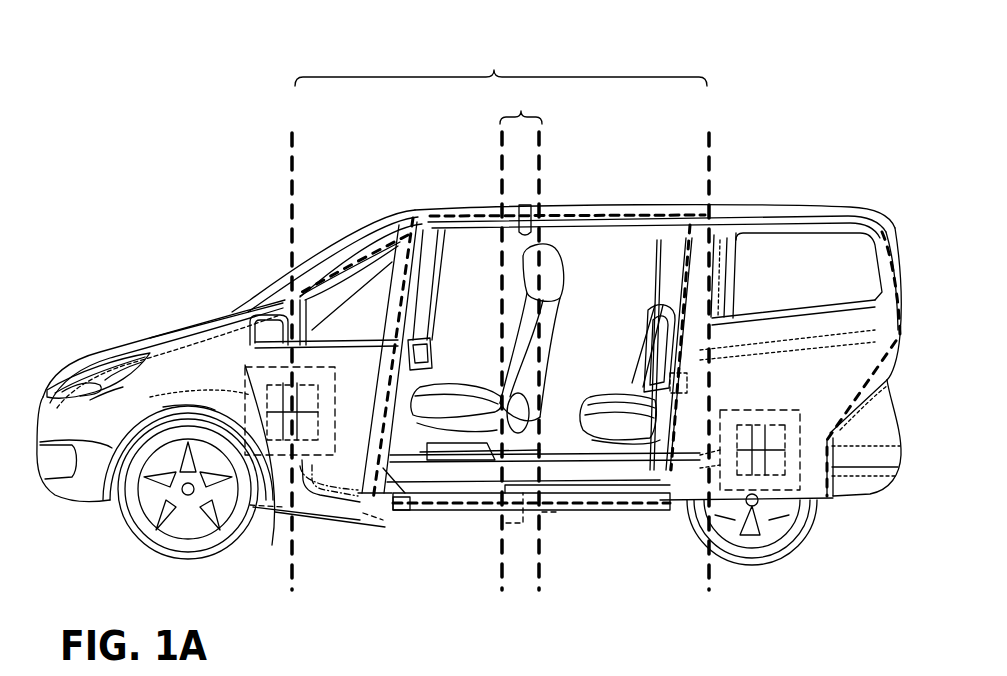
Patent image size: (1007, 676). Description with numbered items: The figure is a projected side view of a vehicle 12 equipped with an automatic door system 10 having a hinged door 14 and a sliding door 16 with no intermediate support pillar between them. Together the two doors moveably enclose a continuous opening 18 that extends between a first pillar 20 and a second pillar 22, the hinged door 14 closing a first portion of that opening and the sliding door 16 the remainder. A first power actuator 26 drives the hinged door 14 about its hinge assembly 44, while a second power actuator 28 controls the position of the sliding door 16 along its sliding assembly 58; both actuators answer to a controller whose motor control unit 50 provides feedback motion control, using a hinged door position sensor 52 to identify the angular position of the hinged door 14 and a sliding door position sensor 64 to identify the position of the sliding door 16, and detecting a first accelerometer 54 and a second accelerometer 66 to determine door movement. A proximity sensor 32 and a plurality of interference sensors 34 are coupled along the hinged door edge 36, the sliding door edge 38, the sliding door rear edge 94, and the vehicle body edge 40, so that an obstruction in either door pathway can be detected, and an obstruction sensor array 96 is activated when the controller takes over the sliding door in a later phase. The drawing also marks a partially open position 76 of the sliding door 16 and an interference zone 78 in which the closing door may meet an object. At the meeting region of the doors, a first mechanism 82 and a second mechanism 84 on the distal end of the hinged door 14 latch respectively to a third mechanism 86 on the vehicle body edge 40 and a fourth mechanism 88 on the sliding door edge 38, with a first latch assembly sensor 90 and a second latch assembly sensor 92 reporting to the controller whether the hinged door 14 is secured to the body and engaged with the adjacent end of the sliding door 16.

The automatic door system 10 is at (176, 188).
The vehicle 12 is at (152, 337).
The hinged door 14 is at (364, 518).
The sliding door 16 is at (815, 214).
The continuous opening 18 is at (500, 316).
The first pillar 20 is at (303, 328).
The second pillar 22 is at (708, 256).
The first power actuator 26 is at (242, 342).
The second power actuator 28 is at (735, 410).
The proximity sensor 32 is at (395, 288).
The interference sensors 34 is at (576, 210).
The hinged door edge 36 is at (395, 478).
The sliding door edge 38 is at (644, 506).
The vehicle body edge 40 is at (622, 212).
The hinge assembly 44 is at (246, 395).
The motor control unit 50 is at (276, 328).
The hinged door position sensor 52 is at (262, 522).
The first accelerometer 54 is at (358, 345).
The sliding assembly 58 is at (736, 442).
The sliding door position sensor 64 is at (752, 508).
The second accelerometer 66 is at (782, 465).
The partially open position 76 is at (521, 104).
The interference zone 78 is at (520, 361).
The first mechanism 82 is at (424, 205).
The second mechanism 84 is at (437, 357).
The third mechanism 86 is at (500, 197).
The fourth mechanism 88 is at (677, 367).
The first latch assembly sensor 90 is at (525, 192).
The second latch assembly sensor 92 is at (670, 387).
The sliding door rear edge 94 is at (890, 246).
The obstruction sensor array 96 is at (668, 212).